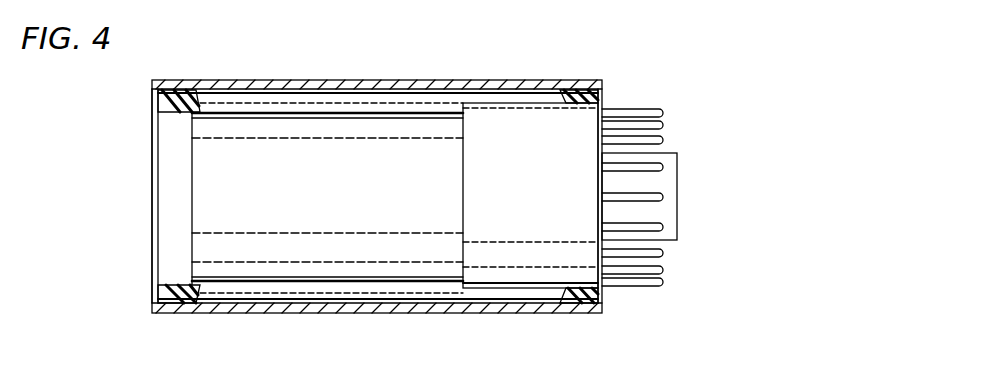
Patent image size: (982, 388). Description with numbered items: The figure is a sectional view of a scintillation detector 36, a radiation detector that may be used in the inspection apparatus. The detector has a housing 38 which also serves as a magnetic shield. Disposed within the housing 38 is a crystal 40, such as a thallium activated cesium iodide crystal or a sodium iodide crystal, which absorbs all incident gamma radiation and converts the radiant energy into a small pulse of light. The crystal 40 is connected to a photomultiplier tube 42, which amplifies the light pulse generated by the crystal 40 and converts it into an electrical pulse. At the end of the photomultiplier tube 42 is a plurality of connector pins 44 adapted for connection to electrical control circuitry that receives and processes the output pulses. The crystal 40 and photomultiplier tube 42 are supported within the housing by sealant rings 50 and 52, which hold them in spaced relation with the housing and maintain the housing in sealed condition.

The scintillation detector 36 is at (377, 173).
The housing 38 is at (396, 306).
The crystal 40 is at (144, 196).
The photomultiplier tube 42 is at (300, 265).
The connector pins 44 is at (634, 225).
The sealant ring 50 is at (180, 300).
The sealant ring 52 is at (576, 306).